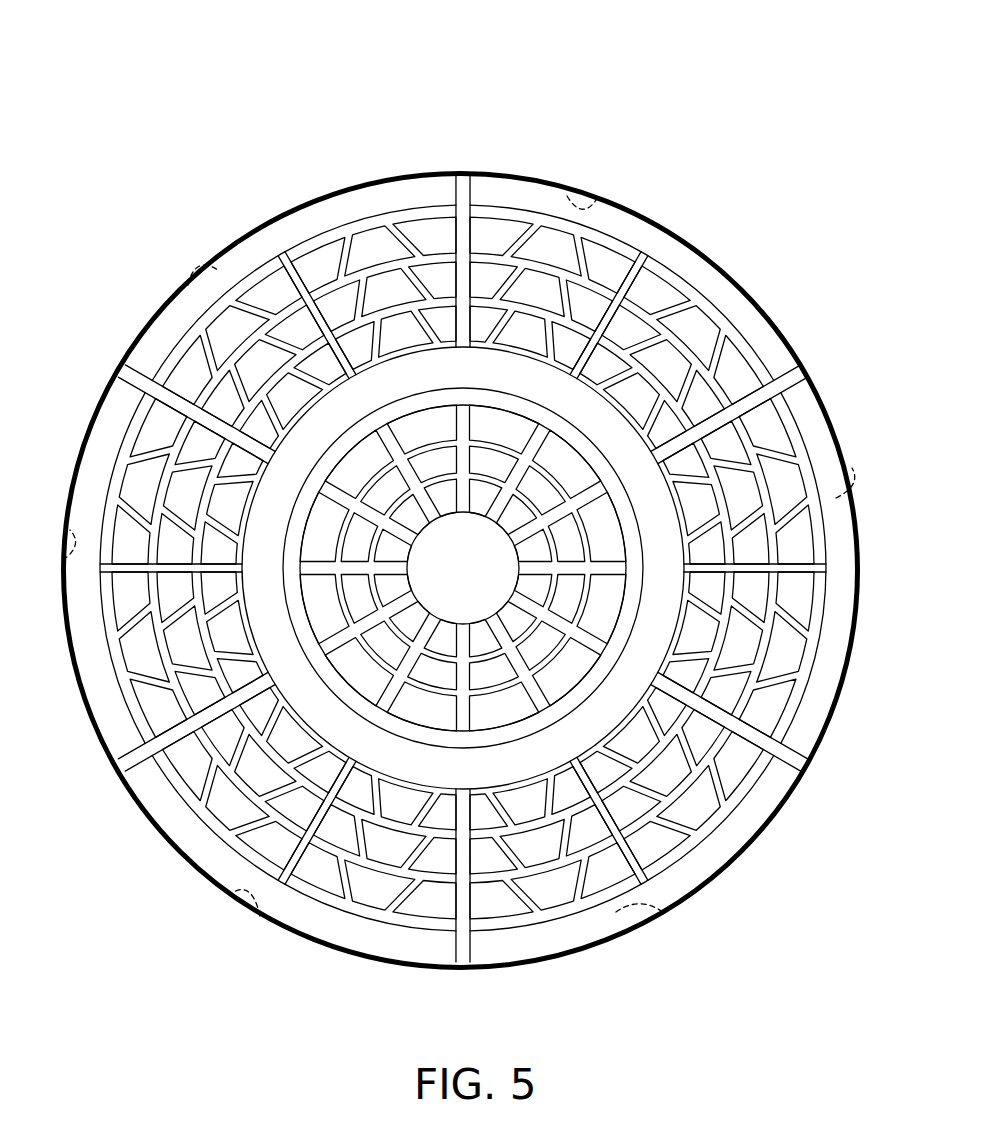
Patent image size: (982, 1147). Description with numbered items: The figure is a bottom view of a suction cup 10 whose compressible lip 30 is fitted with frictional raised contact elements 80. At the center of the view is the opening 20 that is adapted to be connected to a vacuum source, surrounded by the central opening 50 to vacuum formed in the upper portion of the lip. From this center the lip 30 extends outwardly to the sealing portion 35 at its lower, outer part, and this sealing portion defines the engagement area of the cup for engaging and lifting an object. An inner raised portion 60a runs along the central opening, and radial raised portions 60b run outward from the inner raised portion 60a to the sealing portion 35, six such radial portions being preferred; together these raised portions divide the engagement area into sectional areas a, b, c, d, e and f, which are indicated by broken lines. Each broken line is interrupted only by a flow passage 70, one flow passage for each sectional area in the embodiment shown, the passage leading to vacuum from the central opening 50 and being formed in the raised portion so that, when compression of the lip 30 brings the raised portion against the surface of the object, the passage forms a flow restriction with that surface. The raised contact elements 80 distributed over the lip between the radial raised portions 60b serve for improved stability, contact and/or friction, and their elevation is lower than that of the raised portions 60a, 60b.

The suction cup 10 is at (183, 91).
The opening for vacuum 20 is at (480, 584).
The compressible lip 30 is at (731, 244).
The sealing portion 35 is at (187, 857).
The central opening for vacuum 50 is at (570, 503).
The inner raised portion 60a is at (380, 366).
The radial raised portion 60b is at (463, 236).
The flow passage 70 is at (251, 572).
The raised contact element 80 is at (772, 660).
The sectional area a is at (260, 918).
The sectional area b is at (63, 560).
The sectional area c is at (186, 284).
The sectional area d is at (567, 196).
The sectional area e is at (838, 497).
The sectional area f is at (665, 914).